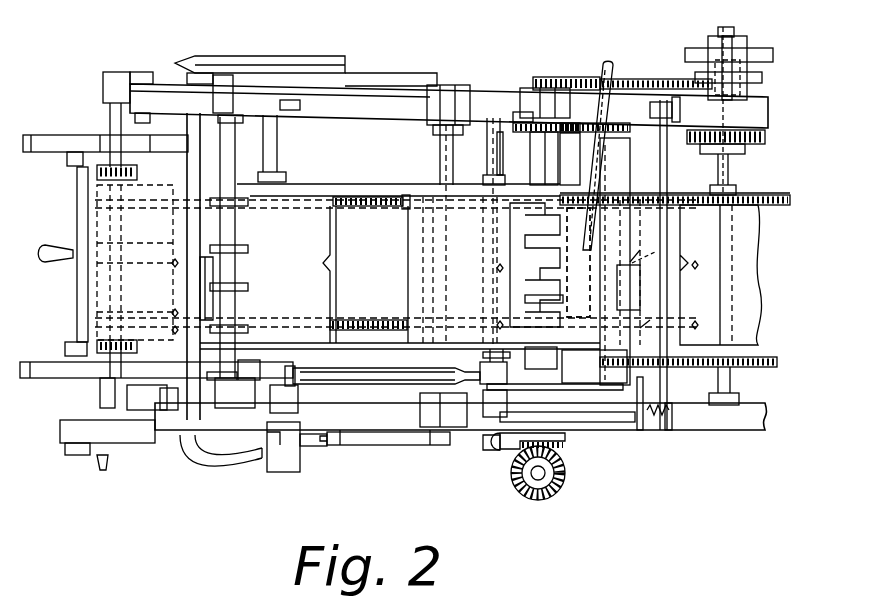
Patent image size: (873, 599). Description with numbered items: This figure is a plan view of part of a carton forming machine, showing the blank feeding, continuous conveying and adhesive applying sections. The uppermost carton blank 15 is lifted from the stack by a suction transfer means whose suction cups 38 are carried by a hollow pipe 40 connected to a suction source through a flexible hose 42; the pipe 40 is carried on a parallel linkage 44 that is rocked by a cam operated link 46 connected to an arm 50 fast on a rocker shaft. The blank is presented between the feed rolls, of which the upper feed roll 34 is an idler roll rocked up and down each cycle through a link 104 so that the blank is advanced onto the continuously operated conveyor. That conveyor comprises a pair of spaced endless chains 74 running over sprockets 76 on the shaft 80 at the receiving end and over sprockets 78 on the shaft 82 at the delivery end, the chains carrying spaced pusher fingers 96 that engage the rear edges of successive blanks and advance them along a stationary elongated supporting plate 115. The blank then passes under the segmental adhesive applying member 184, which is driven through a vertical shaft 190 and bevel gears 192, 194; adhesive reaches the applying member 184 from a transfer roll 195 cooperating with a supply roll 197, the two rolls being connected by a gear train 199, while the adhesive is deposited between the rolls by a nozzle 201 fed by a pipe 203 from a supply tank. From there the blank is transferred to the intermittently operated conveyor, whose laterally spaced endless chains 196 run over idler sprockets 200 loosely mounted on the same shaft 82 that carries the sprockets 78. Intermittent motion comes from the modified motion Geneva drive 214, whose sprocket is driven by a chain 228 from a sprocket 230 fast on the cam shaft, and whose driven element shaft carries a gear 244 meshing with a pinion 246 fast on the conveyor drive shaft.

The shaft 80 is at (228, 121).
The sprockets 76 is at (237, 193).
The hollow pipe 40 is at (187, 242).
The upper feed roll 34 is at (247, 203).
The suction cups 38 is at (200, 312).
The stationary elongated supporting plate 115 is at (344, 197).
The pusher fingers 96 is at (404, 197).
The carton blank 15 is at (333, 232).
The endless chains 74 is at (386, 318).
The shaft 82 is at (494, 153).
The gear train 199 is at (524, 139).
The segmental adhesive applying member 184 is at (515, 295).
The transfer roll 195 is at (563, 302).
The sprocket 230 is at (548, 77).
The chain 228 is at (657, 80).
The pipe 203 is at (611, 64).
The modified motion Geneva drive 214 is at (703, 30).
The gear 244 is at (765, 138).
The pinion 246 is at (742, 149).
The endless chains 196 is at (770, 201).
The idler sprockets 200 is at (643, 193).
The nozzle 201 is at (590, 251).
The supply roll 197 is at (627, 299).
The sprockets 78 is at (633, 262).
The link 104 is at (338, 370).
The parallel linkage 44 is at (155, 460).
The flexible hose 42 is at (200, 464).
The cam operated link 46 is at (310, 453).
The arm 50 is at (390, 444).
The bevel gear 194 is at (563, 452).
The bevel gear 192 is at (547, 502).
The vertical shaft 190 is at (502, 485).